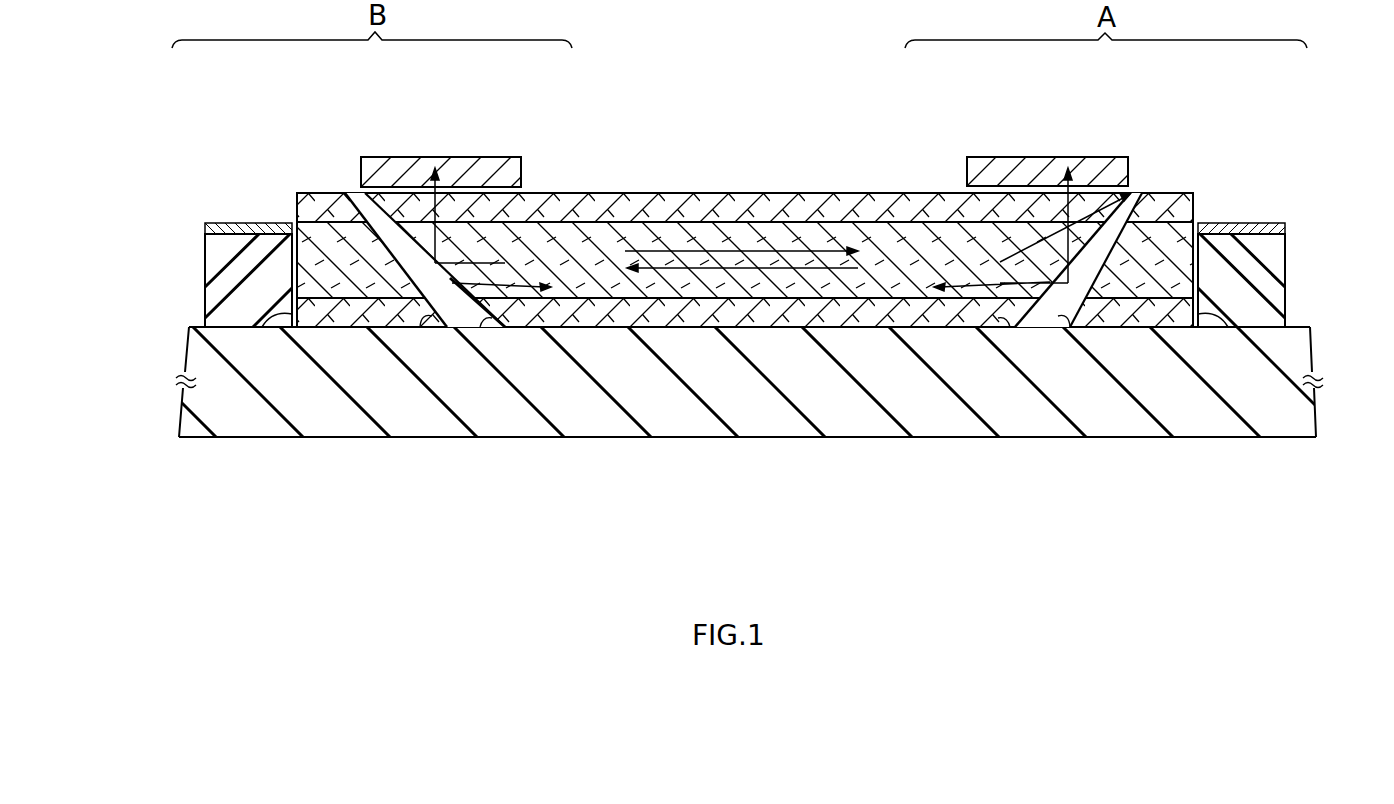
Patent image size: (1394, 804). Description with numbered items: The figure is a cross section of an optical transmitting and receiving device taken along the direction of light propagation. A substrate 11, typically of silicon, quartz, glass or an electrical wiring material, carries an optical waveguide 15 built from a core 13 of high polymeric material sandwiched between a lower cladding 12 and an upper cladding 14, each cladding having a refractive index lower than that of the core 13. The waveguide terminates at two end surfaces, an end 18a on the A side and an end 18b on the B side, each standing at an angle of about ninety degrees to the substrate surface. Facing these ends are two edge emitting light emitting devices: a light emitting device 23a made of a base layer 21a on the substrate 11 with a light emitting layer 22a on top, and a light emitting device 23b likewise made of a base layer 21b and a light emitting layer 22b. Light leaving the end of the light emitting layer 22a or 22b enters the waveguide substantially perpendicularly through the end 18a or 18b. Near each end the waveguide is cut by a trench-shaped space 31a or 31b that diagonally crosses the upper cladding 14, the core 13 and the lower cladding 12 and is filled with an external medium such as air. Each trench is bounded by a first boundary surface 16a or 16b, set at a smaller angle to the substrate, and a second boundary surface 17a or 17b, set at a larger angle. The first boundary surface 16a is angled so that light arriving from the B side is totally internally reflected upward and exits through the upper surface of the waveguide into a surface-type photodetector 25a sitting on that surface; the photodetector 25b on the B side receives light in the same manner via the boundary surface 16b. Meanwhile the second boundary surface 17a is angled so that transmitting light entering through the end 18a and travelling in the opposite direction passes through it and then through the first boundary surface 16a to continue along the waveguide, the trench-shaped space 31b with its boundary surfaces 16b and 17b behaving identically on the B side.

The substrate 11 is at (840, 428).
The cladding 12 is at (905, 296).
The core 13 is at (922, 223).
The cladding 14 is at (930, 193).
The optical waveguide 15 is at (805, 65).
The boundary surface 16a is at (1053, 288).
The boundary surface 16b is at (458, 287).
The boundary surface 17a is at (1087, 281).
The boundary surface 17b is at (413, 278).
The end 18a is at (1226, 327).
The end 18b is at (286, 320).
The base layer 21a is at (1282, 253).
The base layer 21b is at (218, 253).
The light emitting layer 22a is at (1272, 223).
The light emitting layer 22b is at (220, 223).
The light emitting device 23a is at (1344, 200).
The light emitting device 23b is at (144, 197).
The photodetector 25a is at (1007, 167).
The photodetector 25b is at (484, 167).
The trench-shaped space 31a is at (1132, 195).
The trench-shaped space 31b is at (362, 205).